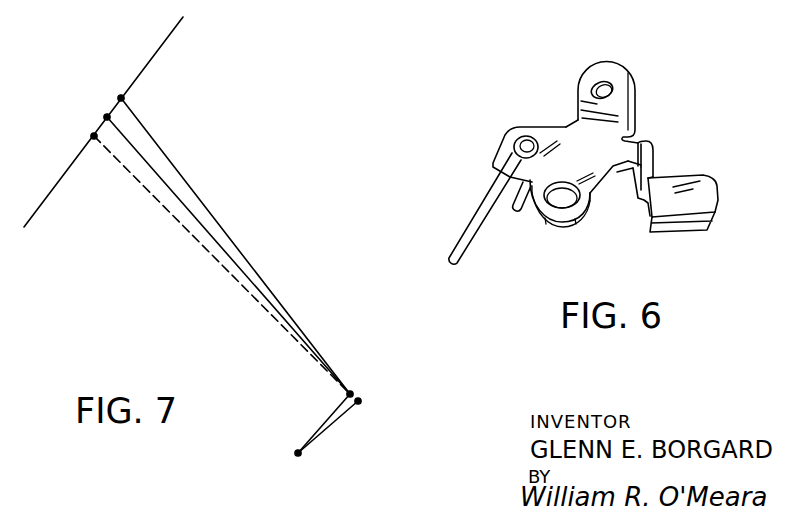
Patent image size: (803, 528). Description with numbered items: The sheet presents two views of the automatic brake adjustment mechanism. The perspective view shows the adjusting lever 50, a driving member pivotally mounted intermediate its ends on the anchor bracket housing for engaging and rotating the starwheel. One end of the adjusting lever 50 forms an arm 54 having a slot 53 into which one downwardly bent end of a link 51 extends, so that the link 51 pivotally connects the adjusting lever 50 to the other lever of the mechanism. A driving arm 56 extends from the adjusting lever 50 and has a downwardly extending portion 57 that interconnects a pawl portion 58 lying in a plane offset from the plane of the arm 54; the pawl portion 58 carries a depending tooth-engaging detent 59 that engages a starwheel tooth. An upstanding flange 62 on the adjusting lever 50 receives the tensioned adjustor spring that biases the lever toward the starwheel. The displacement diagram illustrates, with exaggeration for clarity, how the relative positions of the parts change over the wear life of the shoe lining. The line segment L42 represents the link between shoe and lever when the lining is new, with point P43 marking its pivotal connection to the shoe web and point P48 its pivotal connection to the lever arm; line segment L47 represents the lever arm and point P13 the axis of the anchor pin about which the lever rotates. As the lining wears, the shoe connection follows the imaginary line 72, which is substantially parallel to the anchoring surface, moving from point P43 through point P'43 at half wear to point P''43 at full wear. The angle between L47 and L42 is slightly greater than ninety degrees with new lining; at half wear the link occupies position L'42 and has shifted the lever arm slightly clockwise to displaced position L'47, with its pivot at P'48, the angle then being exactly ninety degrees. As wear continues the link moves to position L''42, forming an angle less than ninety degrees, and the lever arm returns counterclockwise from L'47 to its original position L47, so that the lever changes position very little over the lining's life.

In FIG. 7, the imaginary line 72 is at (158, 52).
In FIG. 7, the point representing pivotal connection with new lining P43 is at (121, 96).
In FIG. 7, the point representing pivotal connection at fifty percent wear P'43 is at (73, 108).
In FIG. 7, the point representing pivotal connection at full wear P''43 is at (57, 145).
In FIG. 7, the line segment representing link position with new lining L42 is at (175, 164).
In FIG. 7, the line segment representing link position at fifty percent wear L'42 is at (224, 255).
In FIG. 7, the line segment representing link position at full wear L''42 is at (222, 265).
In FIG. 7, the point representing pivotal connection of link and lever P48 is at (350, 393).
In FIG. 7, the point representing displaced pivotal connection of link and lever P'48 is at (387, 408).
In FIG. 7, the line segment representing lever arm L47 is at (332, 416).
In FIG. 7, the line segment representing displaced lever arm L'47 is at (357, 429).
In FIG. 7, the point representing anchor pin axis P13 is at (298, 455).
In FIG. 6, the adjusting lever 50 is at (588, 165).
In FIG. 6, the link 51 is at (465, 239).
In FIG. 6, the slot 53 is at (527, 135).
In FIG. 6, the arm 54 is at (505, 143).
In FIG. 6, the driving arm 56 is at (638, 143).
In FIG. 6, the downwardly extending portion 57 is at (652, 169).
In FIG. 6, the pawl portion 58 is at (700, 190).
In FIG. 6, the tooth-engaging detent 59 is at (678, 232).
In FIG. 6, the upstanding flange 62 is at (587, 86).